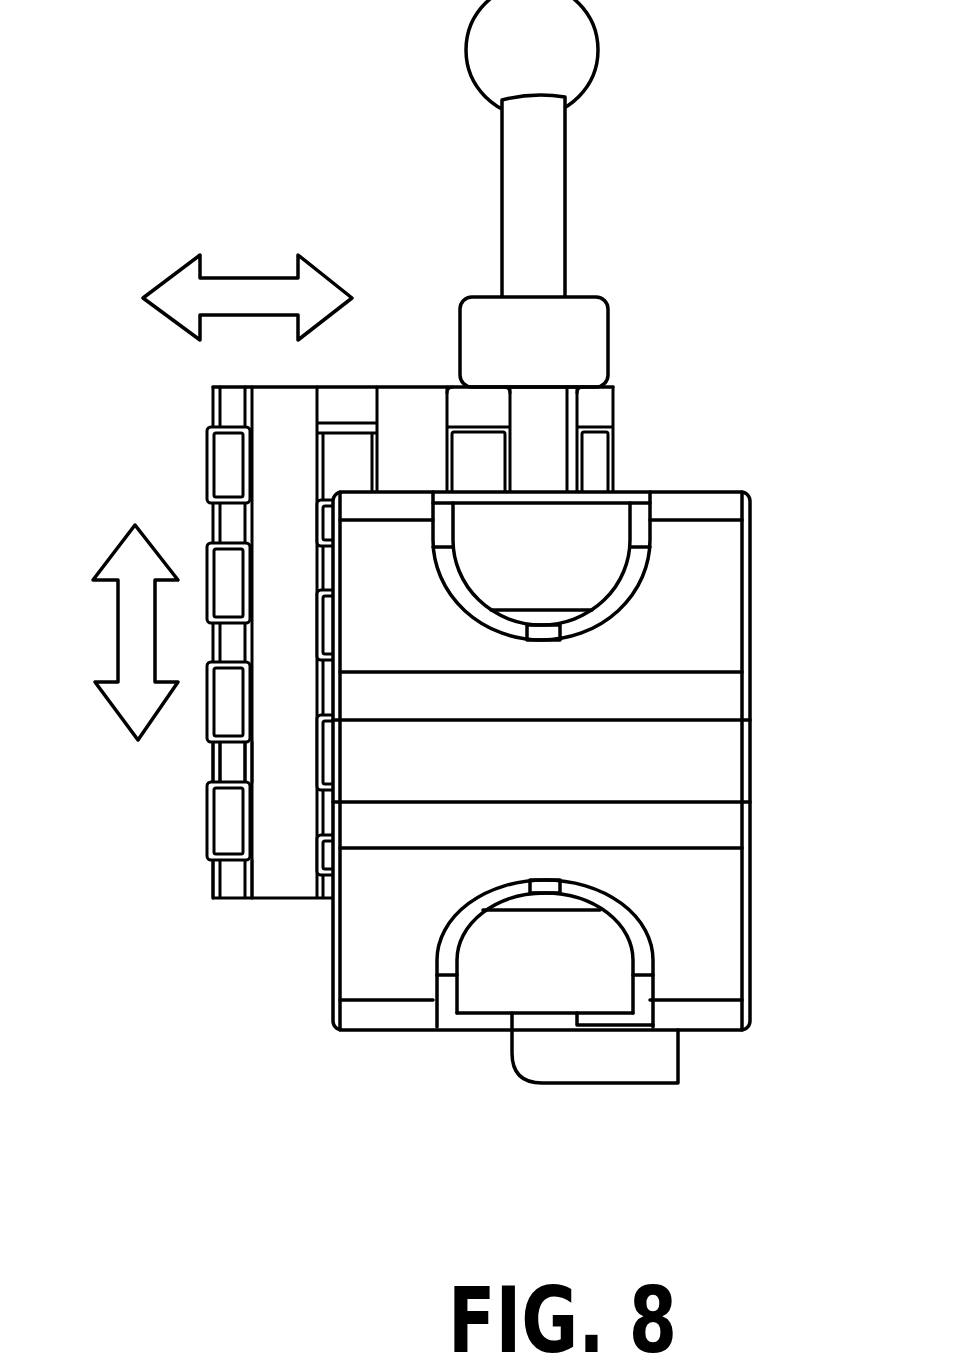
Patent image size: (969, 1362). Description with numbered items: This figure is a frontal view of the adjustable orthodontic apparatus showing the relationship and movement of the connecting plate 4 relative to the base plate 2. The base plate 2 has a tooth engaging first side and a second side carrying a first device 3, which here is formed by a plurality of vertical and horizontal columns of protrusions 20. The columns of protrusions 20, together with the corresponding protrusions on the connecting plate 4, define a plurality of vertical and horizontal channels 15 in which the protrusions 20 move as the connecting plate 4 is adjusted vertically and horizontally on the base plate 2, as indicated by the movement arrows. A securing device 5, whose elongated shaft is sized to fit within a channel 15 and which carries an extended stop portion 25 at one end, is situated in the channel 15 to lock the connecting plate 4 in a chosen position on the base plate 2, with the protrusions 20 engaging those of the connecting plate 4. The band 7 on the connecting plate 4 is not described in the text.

The base plate 2 is at (213, 758).
The first device 3 is at (213, 832).
The connecting plate 4 is at (712, 612).
The securing device 5 is at (547, 227).
The center band 7 is at (727, 778).
The channels 15 is at (414, 430).
The protrusions 20 is at (217, 442).
The extended stop portion 25 is at (590, 338).